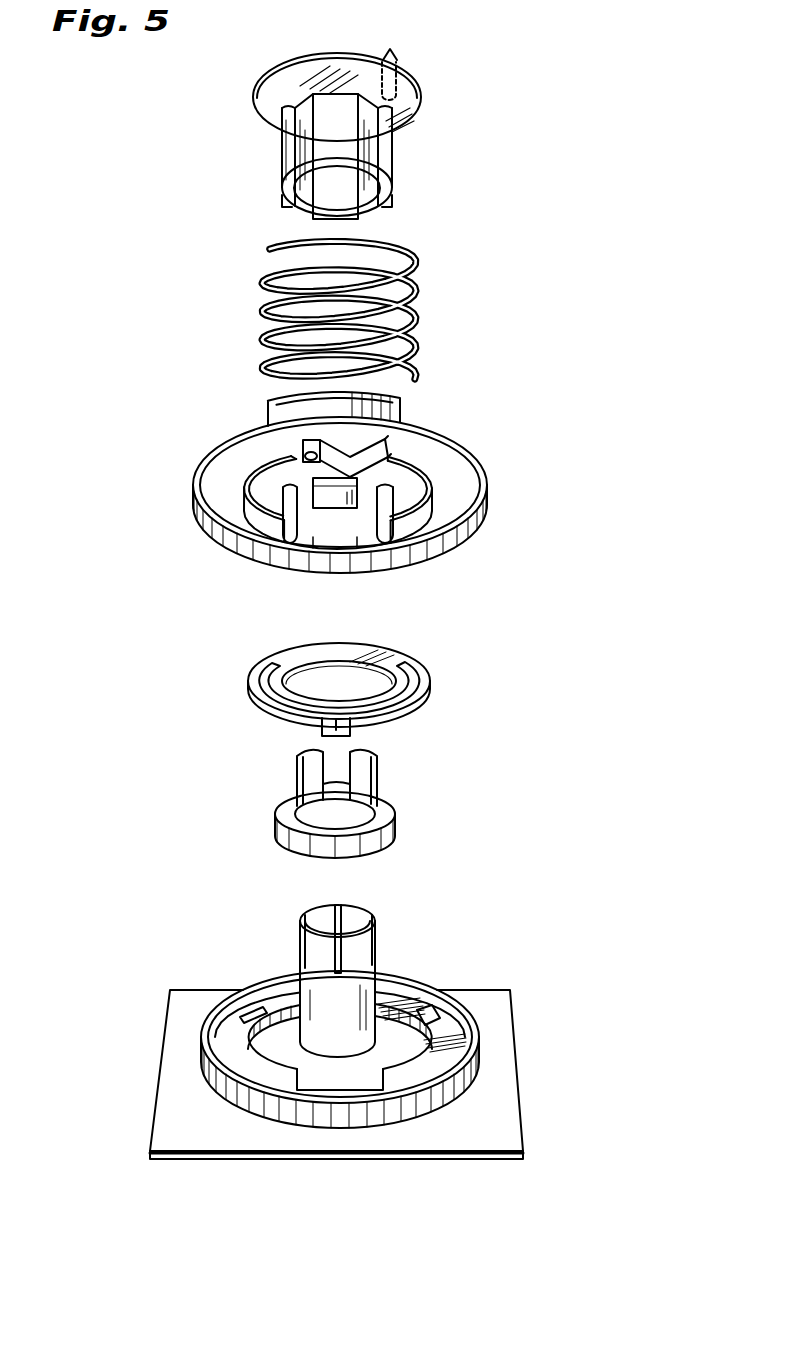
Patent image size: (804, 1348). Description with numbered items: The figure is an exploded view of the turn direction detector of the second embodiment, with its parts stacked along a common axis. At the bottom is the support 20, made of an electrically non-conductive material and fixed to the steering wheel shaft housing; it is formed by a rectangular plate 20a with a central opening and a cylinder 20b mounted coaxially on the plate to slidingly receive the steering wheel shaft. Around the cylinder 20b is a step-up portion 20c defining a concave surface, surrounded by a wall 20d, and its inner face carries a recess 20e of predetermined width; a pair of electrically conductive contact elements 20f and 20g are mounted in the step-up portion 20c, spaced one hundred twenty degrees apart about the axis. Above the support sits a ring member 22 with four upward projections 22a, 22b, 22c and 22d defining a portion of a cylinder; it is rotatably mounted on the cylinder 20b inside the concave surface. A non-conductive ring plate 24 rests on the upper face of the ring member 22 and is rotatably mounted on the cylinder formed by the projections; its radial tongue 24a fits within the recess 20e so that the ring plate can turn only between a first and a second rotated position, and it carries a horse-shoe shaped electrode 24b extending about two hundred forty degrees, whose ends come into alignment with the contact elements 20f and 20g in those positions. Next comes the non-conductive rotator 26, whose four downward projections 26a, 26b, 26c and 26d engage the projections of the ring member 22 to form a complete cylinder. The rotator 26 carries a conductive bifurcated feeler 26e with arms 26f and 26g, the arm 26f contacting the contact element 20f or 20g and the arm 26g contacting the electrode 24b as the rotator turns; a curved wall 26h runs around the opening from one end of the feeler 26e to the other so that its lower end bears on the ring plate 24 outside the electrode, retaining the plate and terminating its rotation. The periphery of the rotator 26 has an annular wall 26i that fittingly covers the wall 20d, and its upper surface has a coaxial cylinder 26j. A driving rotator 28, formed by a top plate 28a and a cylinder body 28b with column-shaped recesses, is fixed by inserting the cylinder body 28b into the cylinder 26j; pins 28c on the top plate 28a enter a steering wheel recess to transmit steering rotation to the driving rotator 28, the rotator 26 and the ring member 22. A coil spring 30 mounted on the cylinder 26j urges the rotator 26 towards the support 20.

The support 20 is at (373, 1053).
The rectangular plate 20a is at (177, 1068).
The cylinder 20b is at (353, 958).
The step-up portion 20c is at (400, 1003).
The wall 20d is at (277, 987).
The recess 20e is at (365, 1088).
The contact element 20f is at (245, 1012).
The contact element 20g is at (442, 1008).
The ring member 22 is at (365, 810).
The projection 22a is at (367, 768).
The projection 22b is at (310, 767).
The projection 22c is at (297, 803).
The projection 22d is at (370, 812).
The ring plate 24 is at (400, 692).
The tongue 24a is at (340, 736).
The electrode 24b is at (415, 688).
The rotator 26 is at (354, 492).
The projection 26a is at (437, 547).
The projection 26b is at (335, 497).
The projection 26c is at (287, 507).
The projection 26d is at (343, 538).
The bifurcated feeler 26e is at (331, 418).
The arm 26f is at (386, 440).
The arm 26g is at (376, 462).
The curved wall 26h is at (432, 483).
The annular wall 26i is at (197, 472).
The cylinder 26j is at (268, 399).
The driving rotator 28 is at (363, 122).
The top plate 28a is at (417, 107).
The cylinder body 28b is at (287, 157).
The pin 28c is at (397, 58).
The coil spring 30 is at (425, 282).